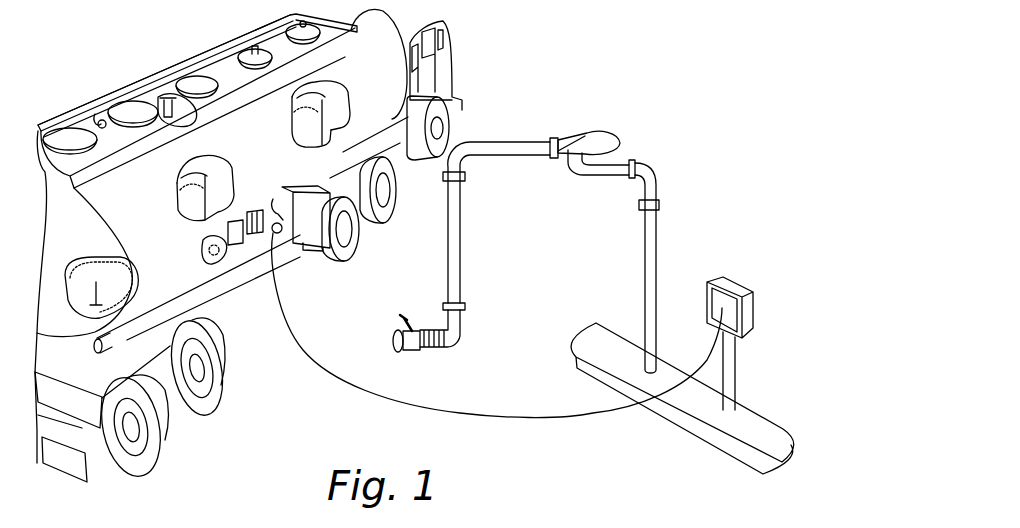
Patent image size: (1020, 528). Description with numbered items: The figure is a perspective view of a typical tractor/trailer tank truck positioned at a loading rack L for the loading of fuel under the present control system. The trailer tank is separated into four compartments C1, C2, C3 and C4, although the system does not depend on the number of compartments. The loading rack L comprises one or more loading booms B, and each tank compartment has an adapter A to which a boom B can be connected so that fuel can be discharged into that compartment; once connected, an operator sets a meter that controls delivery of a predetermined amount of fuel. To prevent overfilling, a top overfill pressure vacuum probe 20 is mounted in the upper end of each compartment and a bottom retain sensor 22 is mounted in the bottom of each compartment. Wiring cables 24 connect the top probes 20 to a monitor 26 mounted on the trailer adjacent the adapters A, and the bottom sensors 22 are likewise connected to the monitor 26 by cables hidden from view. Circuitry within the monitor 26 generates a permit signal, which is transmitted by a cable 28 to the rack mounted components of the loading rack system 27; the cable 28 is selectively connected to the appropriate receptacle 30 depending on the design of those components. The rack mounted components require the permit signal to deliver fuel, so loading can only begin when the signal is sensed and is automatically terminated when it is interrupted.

The overfill pressure vacuum probe 20 is at (100, 116).
The wiring cables 24 is at (214, 64).
The retain sensor 22 is at (101, 287).
The monitor 26 is at (247, 247).
The receptacle 30 is at (278, 197).
The loading rack system 27 is at (755, 274).
The cable 28 is at (712, 355).
The adapter A is at (212, 268).
The loading boom B is at (460, 272).
The loading rack L is at (674, 157).
The compartment C1 is at (320, 94).
The compartment C2 is at (304, 130).
The compartment C3 is at (198, 168).
The compartment C4 is at (181, 191).